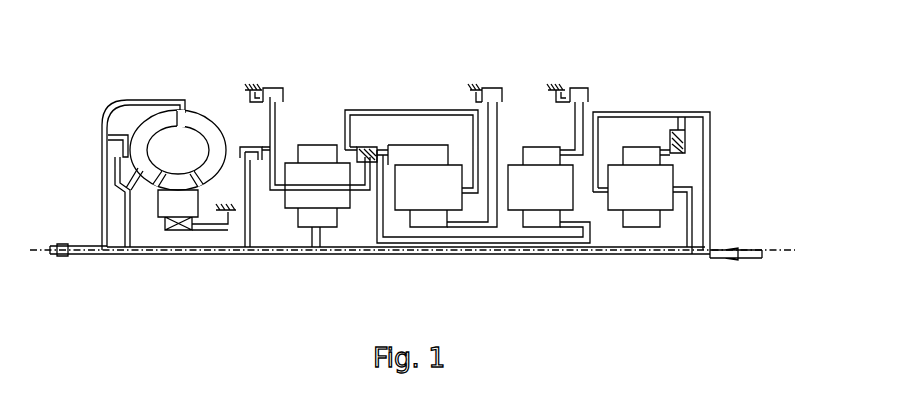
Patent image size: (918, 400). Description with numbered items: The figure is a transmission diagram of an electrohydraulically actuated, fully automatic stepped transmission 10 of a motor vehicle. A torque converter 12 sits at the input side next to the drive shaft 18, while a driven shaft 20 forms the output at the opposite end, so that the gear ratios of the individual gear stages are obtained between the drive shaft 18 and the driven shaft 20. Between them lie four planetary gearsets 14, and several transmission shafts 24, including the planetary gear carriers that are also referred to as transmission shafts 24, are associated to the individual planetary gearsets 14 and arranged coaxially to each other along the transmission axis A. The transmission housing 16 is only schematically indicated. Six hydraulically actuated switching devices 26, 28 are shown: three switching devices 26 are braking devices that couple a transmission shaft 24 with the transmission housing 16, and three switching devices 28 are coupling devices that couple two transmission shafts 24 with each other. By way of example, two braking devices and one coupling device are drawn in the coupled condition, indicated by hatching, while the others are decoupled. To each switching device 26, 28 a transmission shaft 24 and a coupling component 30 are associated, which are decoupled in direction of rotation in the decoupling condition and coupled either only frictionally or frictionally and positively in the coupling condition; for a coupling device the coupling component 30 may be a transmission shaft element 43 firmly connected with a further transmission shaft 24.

The stepped transmission 10 is at (632, 47).
The torque converter 12 is at (201, 97).
The planetary gearset 14 is at (293, 228).
The transmission housing 16 is at (250, 80).
The drive shaft 18 is at (80, 256).
The driven shaft 20 is at (733, 259).
The transmission shaft 24 is at (418, 110).
The switching device (braking device) 26 is at (274, 88).
The switching device (coupling device) 28 is at (247, 142).
The coupling component 30 is at (508, 128).
The transmission shaft element 43 is at (277, 120).
The transmission axis A is at (419, 256).